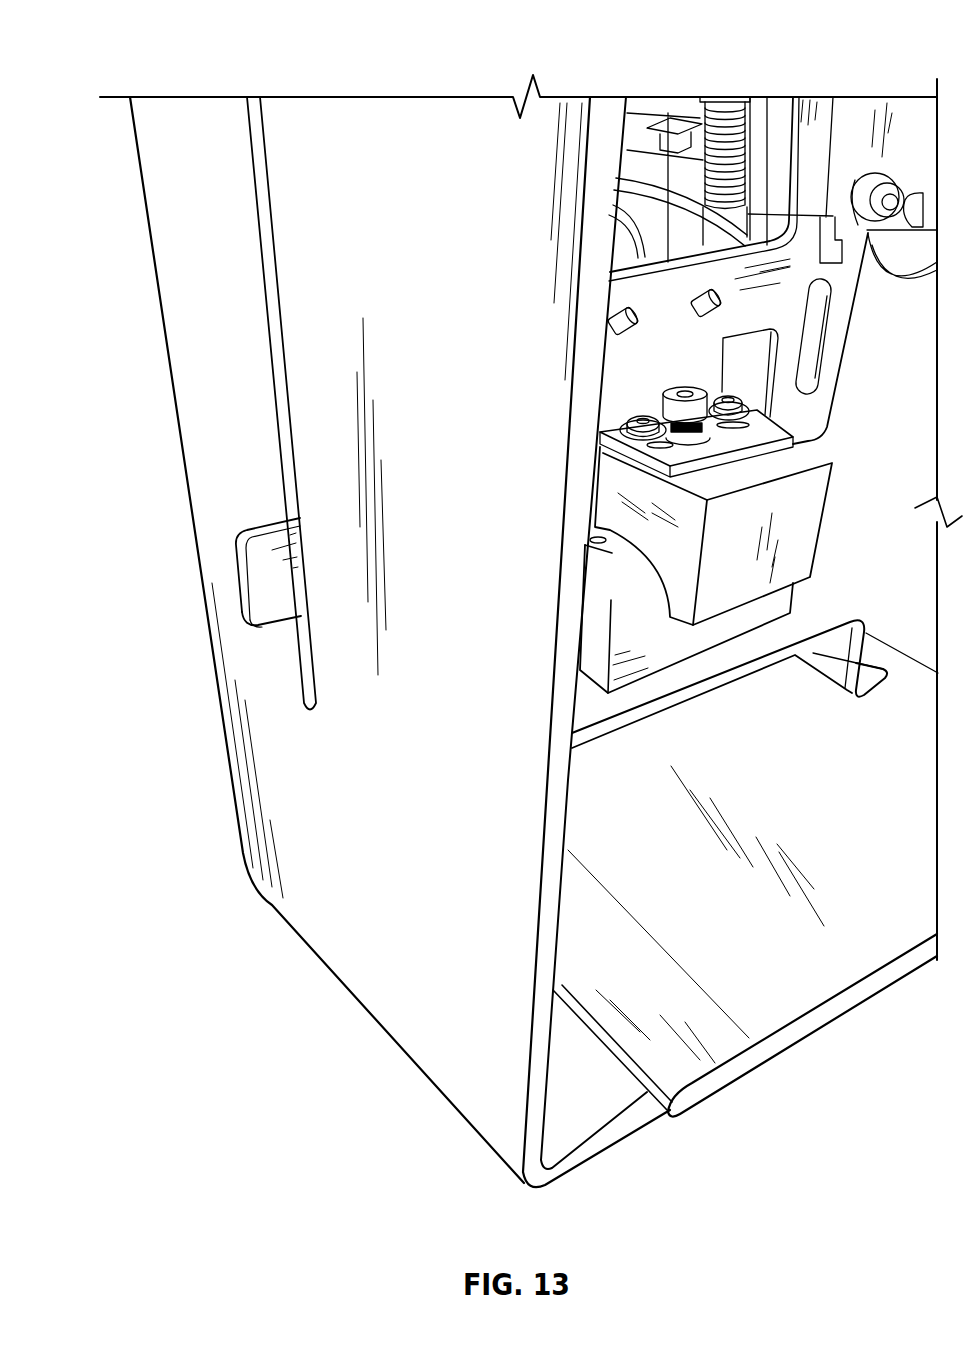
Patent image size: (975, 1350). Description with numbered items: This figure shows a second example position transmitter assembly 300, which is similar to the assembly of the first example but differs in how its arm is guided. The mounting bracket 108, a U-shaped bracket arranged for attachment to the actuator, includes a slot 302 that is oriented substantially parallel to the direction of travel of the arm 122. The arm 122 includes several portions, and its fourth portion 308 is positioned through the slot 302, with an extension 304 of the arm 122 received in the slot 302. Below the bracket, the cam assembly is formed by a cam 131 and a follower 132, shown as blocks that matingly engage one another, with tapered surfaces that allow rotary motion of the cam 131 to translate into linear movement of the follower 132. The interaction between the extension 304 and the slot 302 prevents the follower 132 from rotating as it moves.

The position transmitter assembly 300 is at (839, 50).
The mounting bracket 108 is at (178, 252).
The slot 302 is at (285, 428).
The fourth portion 308 is at (258, 561).
The extension 304 is at (268, 607).
The arm 122 is at (835, 346).
The follower 132 is at (807, 507).
The cam 131 is at (687, 642).